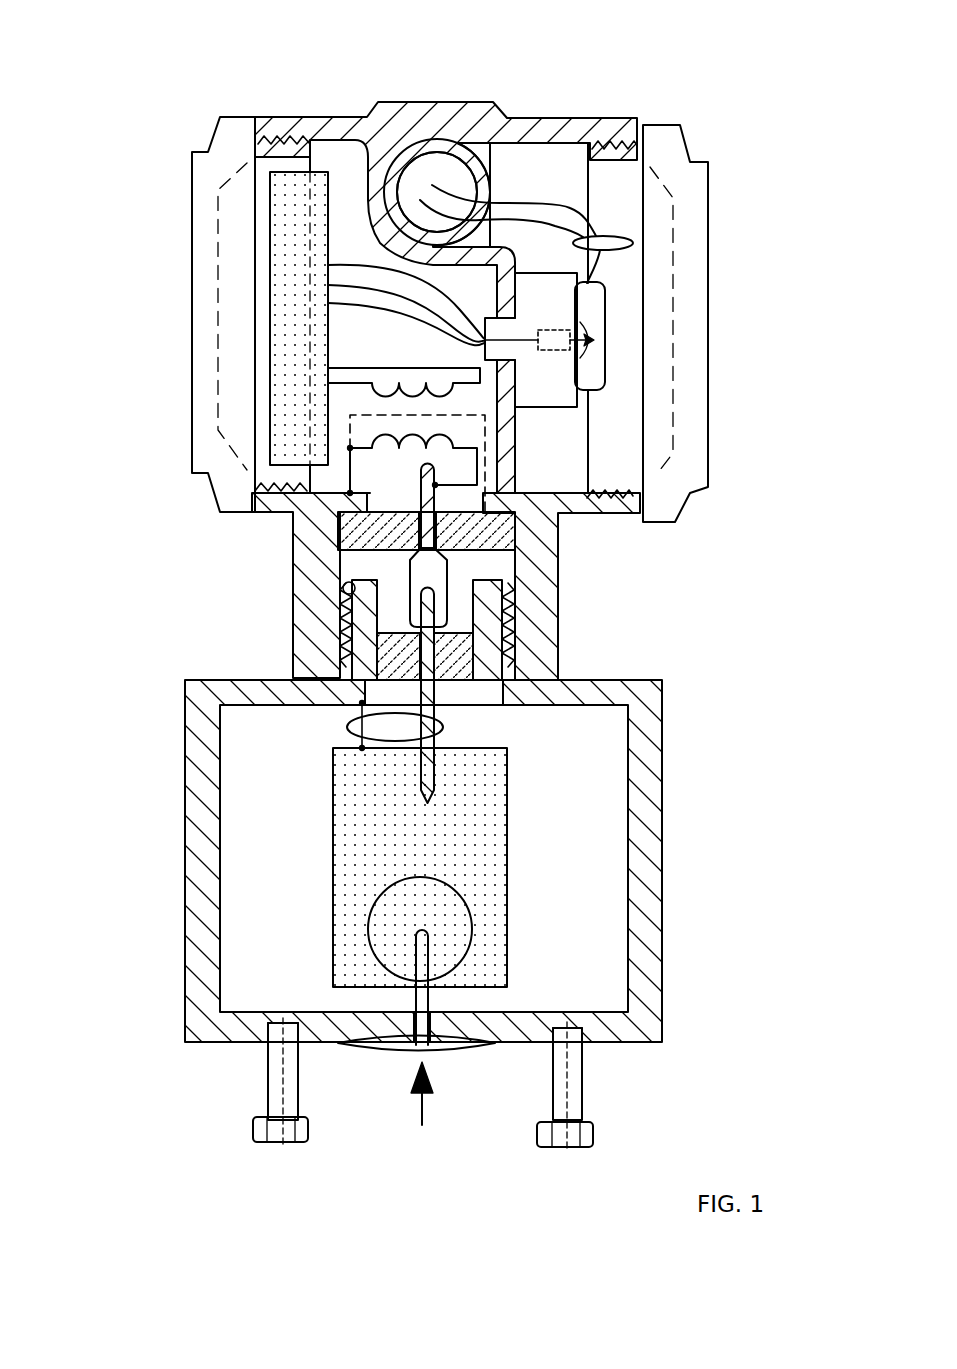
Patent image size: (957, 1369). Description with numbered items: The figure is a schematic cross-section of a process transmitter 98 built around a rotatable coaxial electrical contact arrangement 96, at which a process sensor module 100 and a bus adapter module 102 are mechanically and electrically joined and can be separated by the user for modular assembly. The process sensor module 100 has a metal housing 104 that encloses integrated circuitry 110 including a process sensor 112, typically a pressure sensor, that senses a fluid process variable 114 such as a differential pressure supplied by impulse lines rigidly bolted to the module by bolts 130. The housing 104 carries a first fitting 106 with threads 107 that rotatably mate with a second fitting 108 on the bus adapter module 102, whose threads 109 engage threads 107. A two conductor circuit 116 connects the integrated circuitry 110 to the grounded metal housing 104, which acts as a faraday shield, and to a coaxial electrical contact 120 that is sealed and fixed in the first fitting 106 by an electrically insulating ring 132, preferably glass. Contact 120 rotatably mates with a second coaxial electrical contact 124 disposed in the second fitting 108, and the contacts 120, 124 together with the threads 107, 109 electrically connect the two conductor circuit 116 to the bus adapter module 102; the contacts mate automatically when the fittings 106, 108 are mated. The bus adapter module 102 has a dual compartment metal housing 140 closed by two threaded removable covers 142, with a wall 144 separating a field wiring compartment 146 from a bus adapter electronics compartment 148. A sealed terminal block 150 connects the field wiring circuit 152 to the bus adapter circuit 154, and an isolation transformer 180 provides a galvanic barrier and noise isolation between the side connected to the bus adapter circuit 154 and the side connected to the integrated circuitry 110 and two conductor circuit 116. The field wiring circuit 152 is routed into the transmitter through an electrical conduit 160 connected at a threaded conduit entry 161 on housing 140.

The rotatable coaxial electrical contact arrangement 96 is at (140, 573).
The process transmitter 98 is at (843, 500).
The process sensor module 100 is at (681, 689).
The bus adapter module 102 is at (720, 487).
The housing 104 is at (650, 733).
The first fitting 106 is at (363, 630).
The threads 107 is at (347, 587).
The second fitting 108 is at (313, 590).
The threads 109 is at (337, 588).
The integrated circuitry 110 is at (383, 842).
The process sensor 112 is at (402, 927).
The fluid process variable 114 is at (420, 1112).
The two conductor circuit 116 is at (347, 723).
The coaxial electrical contact 120 is at (430, 613).
The second coaxial electrical contact 124 is at (430, 566).
The bolts 130 is at (268, 1083).
The electrically insulating ring 132 is at (457, 663).
The metal housing 140 is at (410, 102).
The threaded removable covers 142 is at (191, 203).
The wall 144 is at (517, 470).
The field wiring compartment 146 is at (560, 183).
The bus adapter electronics compartment 148 is at (380, 261).
The sealed terminal block 150 is at (565, 386).
The field wiring circuit 152 is at (633, 243).
The bus adapter circuit 154 is at (295, 313).
The electrical conduit 160 is at (458, 195).
The threaded conduit entry 161 is at (432, 160).
The isolation transformer 180 is at (429, 361).